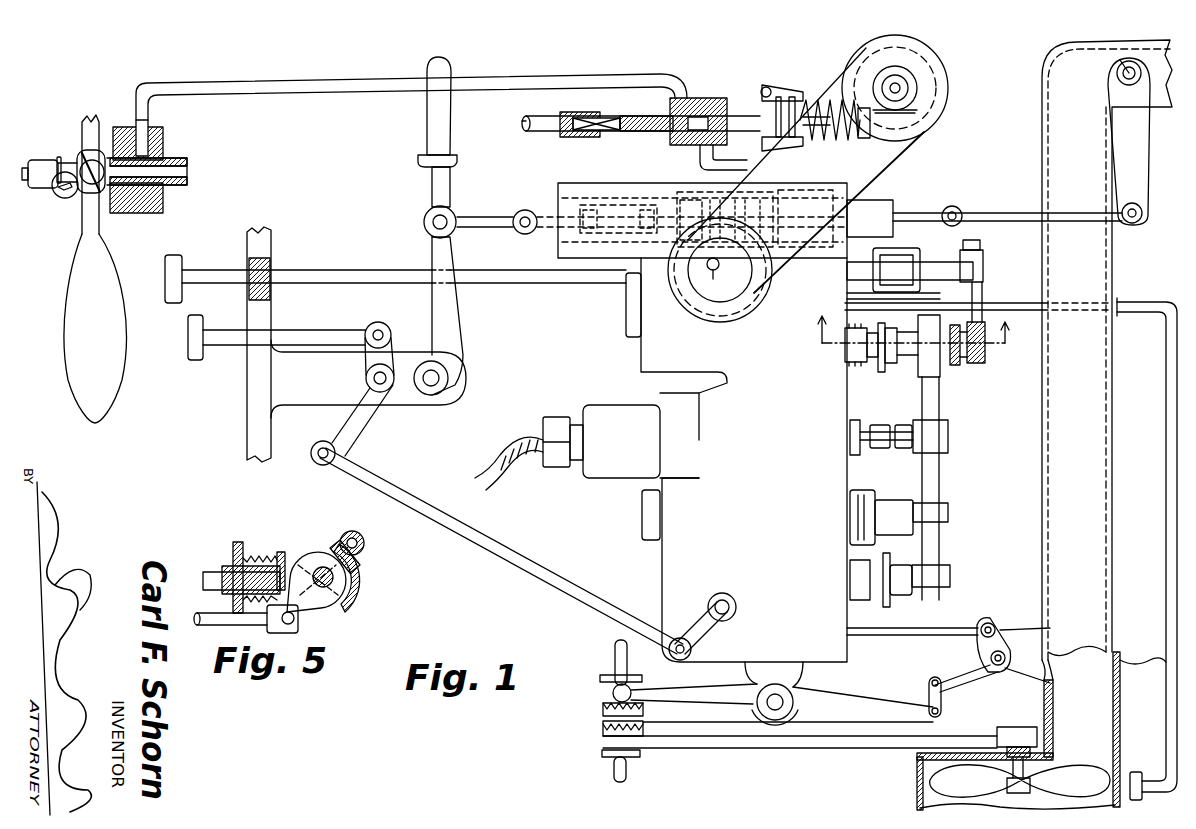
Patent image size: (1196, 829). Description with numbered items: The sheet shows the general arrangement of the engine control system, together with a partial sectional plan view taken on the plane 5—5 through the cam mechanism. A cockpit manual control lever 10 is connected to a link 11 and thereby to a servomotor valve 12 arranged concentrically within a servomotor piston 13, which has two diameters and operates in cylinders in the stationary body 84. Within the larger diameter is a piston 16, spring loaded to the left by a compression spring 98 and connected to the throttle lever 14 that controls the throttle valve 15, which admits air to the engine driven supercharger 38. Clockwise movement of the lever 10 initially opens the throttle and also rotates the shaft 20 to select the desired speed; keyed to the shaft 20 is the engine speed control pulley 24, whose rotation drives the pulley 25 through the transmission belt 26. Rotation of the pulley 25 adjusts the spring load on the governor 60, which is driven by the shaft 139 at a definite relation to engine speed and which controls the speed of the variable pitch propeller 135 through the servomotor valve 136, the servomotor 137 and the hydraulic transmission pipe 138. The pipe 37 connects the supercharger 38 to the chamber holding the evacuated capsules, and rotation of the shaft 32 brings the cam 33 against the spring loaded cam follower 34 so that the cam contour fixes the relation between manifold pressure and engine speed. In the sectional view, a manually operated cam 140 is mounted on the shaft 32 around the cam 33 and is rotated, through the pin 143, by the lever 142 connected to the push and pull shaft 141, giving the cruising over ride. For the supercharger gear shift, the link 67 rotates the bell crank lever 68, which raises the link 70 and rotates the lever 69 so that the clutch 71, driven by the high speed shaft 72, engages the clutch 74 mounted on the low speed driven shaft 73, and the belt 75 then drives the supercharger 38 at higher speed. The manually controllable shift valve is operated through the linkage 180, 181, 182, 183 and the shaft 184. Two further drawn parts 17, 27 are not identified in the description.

In FIG. 1, the section plane 5 is at (907, 329).
In FIG. 1, the cockpit manual control lever 10 is at (455, 312).
In FIG. 1, the link 11 is at (512, 213).
In FIG. 1, the servomotor valve 12 is at (608, 212).
In FIG. 1, the servomotor piston 13 is at (688, 193).
In FIG. 1, the throttle lever 14 is at (1143, 180).
In FIG. 1, the throttle valve 15 is at (1120, 70).
In FIG. 1, the piston 16 is at (690, 208).
In FIG. 1, the cable end 17 is at (760, 289).
In FIG. 1, the shaft 20 is at (720, 271).
In FIG. 1, the engine speed control pulley 24 is at (731, 322).
In FIG. 1, the pulley 25 is at (947, 78).
In FIG. 1, the transmission belt 26 is at (858, 200).
In FIG. 1, the cable connector 27 is at (505, 435).
In FIG. 1, the shaft 32 is at (940, 478).
In FIG. 5, the shaft 32 is at (362, 583).
In FIG. 5, the cam 33 is at (318, 550).
In FIG. 5, the spring loaded cam follower 34 is at (279, 552).
In FIG. 1, the pipe 37 is at (1012, 300).
In FIG. 1, the engine driven supercharger 38 is at (1075, 773).
In FIG. 1, the governor 60 is at (780, 88).
In FIG. 1, the link 67 is at (945, 628).
In FIG. 1, the bell crank lever 68 is at (1003, 640).
In FIG. 1, the lever 69 is at (885, 695).
In FIG. 1, the link 70 is at (942, 697).
In FIG. 1, the clutch 71 is at (603, 716).
In FIG. 1, the high speed shaft 72 is at (612, 645).
In FIG. 1, the low speed driven shaft 73 is at (612, 770).
In FIG. 1, the clutch 74 is at (603, 728).
In FIG. 1, the belt 75 is at (712, 736).
In FIG. 1, the stationary body 84 is at (800, 176).
In FIG. 1, the compression spring 98 is at (750, 205).
In FIG. 1, the variable pitch propeller 135 is at (104, 390).
In FIG. 1, the servomotor valve 136 is at (640, 112).
In FIG. 1, the servomotor 137 is at (160, 137).
In FIG. 1, the hydraulic transmission pipe 138 is at (309, 90).
In FIG. 1, the shaft 139 is at (535, 127).
In FIG. 1, the manually operated cam 140 is at (905, 370).
In FIG. 5, the manually operated cam 140 is at (360, 565).
In FIG. 1, the push and pull shaft 141 is at (345, 264).
In FIG. 5, the push and pull shaft 141 is at (212, 580).
In FIG. 1, the lever 142 is at (968, 250).
In FIG. 5, the lever 142 is at (300, 622).
In FIG. 1, the pin 143 is at (972, 365).
In FIG. 5, the pin 143 is at (350, 531).
In FIG. 1, the linkage 180 is at (333, 334).
In FIG. 1, the linkage 181 is at (370, 436).
In FIG. 1, the linkage 182 is at (541, 568).
In FIG. 1, the linkage 183 is at (708, 630).
In FIG. 1, the shaft 184 is at (738, 605).